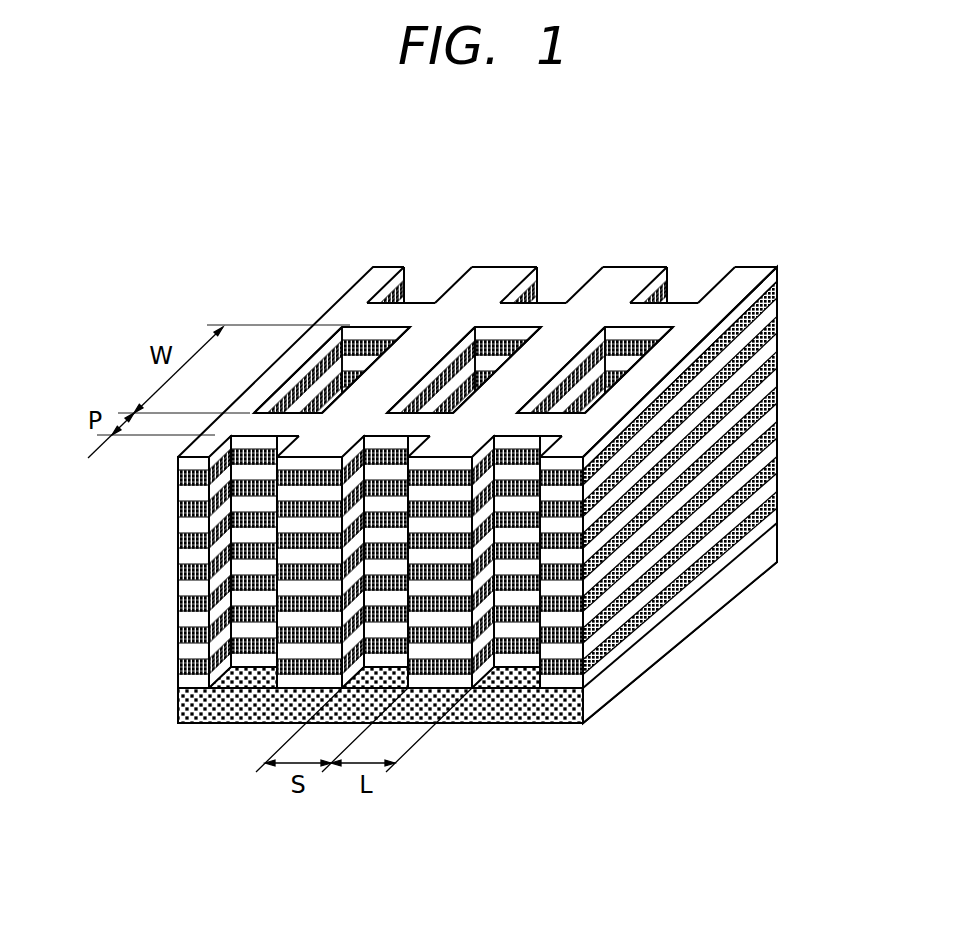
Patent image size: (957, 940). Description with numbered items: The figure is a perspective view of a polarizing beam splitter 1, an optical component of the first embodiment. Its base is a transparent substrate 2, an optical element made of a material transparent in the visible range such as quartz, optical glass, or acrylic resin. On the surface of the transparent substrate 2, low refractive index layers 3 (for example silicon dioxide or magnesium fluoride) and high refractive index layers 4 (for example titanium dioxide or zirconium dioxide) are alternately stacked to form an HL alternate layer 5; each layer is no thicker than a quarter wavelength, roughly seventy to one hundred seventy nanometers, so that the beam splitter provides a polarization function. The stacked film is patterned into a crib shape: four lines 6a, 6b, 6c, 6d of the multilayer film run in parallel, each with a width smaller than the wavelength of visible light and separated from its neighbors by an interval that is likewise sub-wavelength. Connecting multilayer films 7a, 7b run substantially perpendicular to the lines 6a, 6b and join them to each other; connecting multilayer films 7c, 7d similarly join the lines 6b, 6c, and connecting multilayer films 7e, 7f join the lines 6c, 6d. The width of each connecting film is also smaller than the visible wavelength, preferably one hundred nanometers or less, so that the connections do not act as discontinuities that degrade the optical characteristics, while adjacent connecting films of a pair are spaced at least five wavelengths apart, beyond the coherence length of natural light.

The polarizing beam splitter 1 is at (165, 577).
The transparent substrate 2 is at (765, 527).
The low refractive index layers 3 is at (779, 293).
The high refractive index layers 4 is at (773, 281).
The HL alternate layer 5 is at (817, 267).
The line of the multilayer film 6a is at (380, 273).
The line of the multilayer film 6b is at (497, 275).
The line of the multilayer film 6c is at (628, 273).
The line of the multilayer film 6d is at (745, 277).
The connecting multilayer film 7a is at (405, 315).
The connecting multilayer film 7b is at (207, 520).
The connecting multilayer film 7c is at (533, 312).
The connecting multilayer film 7d is at (408, 425).
The connecting multilayer film 7e is at (668, 312).
The connecting multilayer film 7f is at (545, 423).